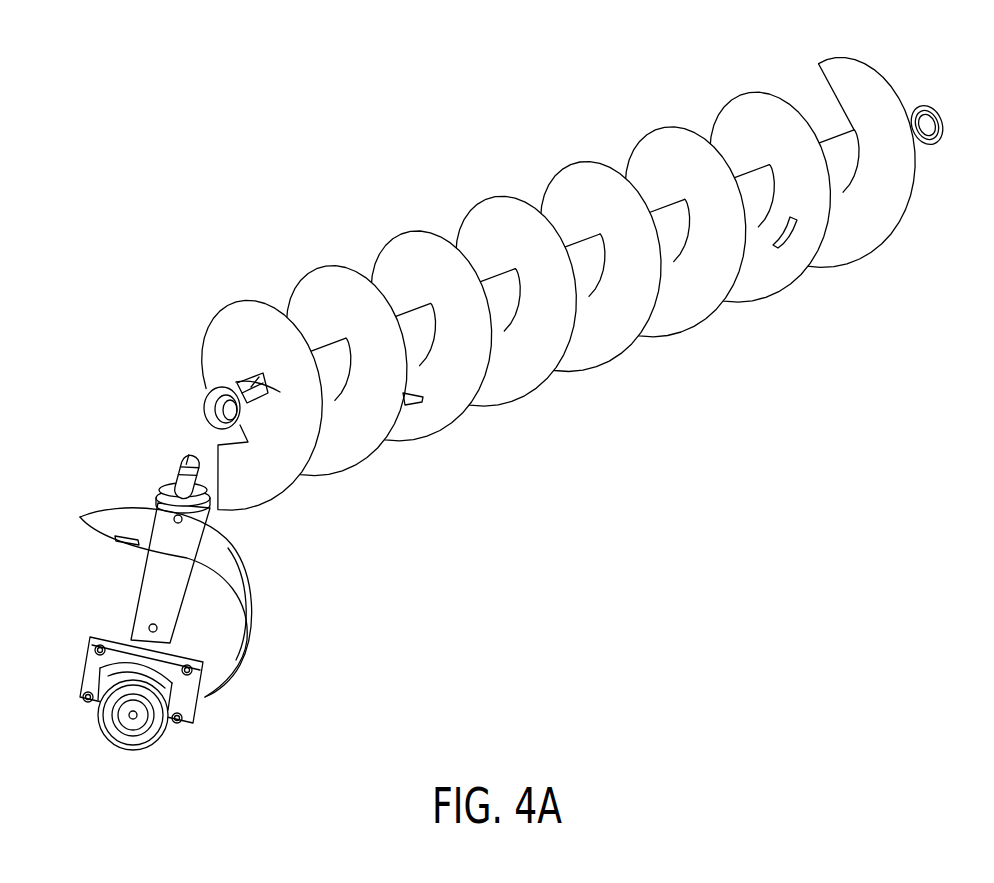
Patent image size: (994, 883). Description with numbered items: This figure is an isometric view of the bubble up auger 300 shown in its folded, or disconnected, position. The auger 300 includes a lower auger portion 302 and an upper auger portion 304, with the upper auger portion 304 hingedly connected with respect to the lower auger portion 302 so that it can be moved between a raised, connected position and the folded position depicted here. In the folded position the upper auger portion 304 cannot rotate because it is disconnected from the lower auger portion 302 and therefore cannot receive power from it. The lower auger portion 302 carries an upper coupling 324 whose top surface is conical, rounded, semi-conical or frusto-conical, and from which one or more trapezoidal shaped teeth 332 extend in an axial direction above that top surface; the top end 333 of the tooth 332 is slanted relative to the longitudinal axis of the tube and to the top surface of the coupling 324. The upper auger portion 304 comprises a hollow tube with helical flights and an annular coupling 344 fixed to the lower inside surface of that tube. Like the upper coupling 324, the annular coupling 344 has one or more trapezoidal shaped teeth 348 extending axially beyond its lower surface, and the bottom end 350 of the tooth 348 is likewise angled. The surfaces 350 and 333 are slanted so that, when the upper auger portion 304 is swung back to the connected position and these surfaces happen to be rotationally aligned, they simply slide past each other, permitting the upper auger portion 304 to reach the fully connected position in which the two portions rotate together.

The bubble up auger 300 is at (150, 78).
The lower auger portion 302 is at (90, 604).
The upper auger portion 304 is at (545, 130).
The upper coupling 324 is at (157, 493).
The trapezoidal shaped tooth 332 is at (193, 480).
The top end of tooth 333 is at (180, 455).
The annular coupling 344 is at (206, 392).
The trapezoidal shaped tooth 348 is at (244, 380).
The bottom end of tooth 350 is at (247, 388).